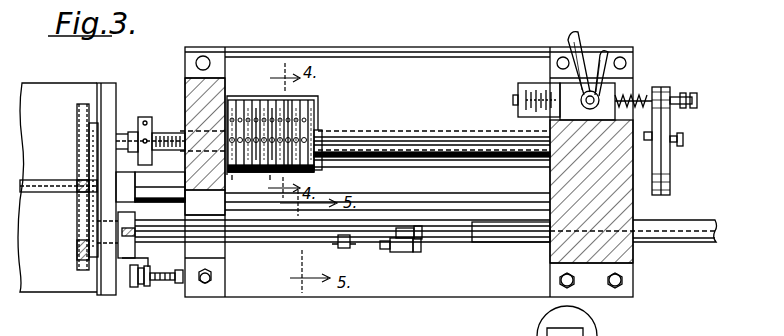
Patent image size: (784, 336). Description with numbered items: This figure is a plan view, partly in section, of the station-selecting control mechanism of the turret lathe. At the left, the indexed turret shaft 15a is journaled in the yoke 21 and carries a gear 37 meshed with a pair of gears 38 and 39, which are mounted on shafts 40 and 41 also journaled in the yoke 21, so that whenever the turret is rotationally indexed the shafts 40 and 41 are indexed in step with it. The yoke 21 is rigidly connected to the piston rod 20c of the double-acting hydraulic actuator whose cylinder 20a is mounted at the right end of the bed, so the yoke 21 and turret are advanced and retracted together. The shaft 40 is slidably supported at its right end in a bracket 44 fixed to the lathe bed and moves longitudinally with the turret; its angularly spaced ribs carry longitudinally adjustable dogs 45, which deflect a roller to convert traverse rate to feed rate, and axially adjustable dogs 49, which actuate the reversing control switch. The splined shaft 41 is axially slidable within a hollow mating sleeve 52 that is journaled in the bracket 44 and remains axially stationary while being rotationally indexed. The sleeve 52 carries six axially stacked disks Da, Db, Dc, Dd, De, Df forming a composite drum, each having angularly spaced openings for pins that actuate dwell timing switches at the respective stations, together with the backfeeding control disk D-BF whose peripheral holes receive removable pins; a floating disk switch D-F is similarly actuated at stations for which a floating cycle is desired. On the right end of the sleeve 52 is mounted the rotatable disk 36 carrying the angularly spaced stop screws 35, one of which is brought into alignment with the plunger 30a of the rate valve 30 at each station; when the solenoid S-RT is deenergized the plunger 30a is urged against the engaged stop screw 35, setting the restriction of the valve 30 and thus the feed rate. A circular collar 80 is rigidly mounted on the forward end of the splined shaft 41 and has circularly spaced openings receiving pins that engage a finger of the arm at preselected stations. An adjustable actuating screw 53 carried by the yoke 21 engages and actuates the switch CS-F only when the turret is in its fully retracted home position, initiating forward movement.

The turret shaft 15a is at (37, 182).
The yoke 21 is at (105, 83).
The gear 39 is at (77, 117).
The gear 37 is at (78, 189).
The gear 38 is at (78, 255).
The circular collar 80 is at (143, 119).
The splined shaft 41 is at (168, 133).
The piston rod 20c is at (138, 193).
The adjustable actuating screw 53 is at (157, 286).
The switch CS-F is at (190, 290).
The floating disk switch D-F is at (308, 112).
The disk Da is at (225, 198).
The disk Db is at (242, 180).
The disk Dc is at (270, 178).
The disk Dd is at (258, 118).
The disk De is at (268, 116).
The disk Df is at (280, 170).
The backfeeding control disk D-BF is at (288, 106).
The sleeve 52 is at (425, 133).
The cylinder 20a is at (480, 188).
The shaft 40 is at (455, 242).
The longitudinally adjustable dog 45 is at (343, 238).
The axially adjustable dog 49 is at (398, 252).
The solenoid S-RT is at (533, 83).
The valve 30 is at (615, 60).
The valve plunger 30a is at (645, 88).
The rotatable disk 36 is at (662, 88).
The stop screws 35 is at (683, 137).
The bracket 44 is at (627, 253).